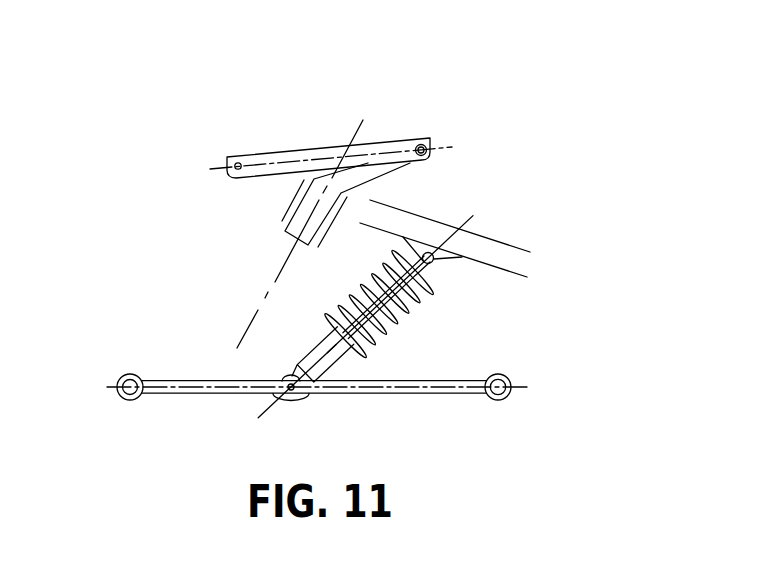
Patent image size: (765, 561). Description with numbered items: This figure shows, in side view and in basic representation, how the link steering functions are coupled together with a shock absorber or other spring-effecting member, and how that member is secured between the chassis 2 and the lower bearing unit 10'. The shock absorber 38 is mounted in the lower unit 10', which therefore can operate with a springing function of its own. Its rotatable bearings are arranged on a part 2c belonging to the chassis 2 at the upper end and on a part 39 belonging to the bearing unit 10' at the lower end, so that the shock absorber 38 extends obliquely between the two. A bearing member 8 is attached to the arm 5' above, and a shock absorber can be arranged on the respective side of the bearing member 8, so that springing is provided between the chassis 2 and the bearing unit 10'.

The lever arm 5' is at (331, 210).
The bearing member 8 is at (288, 212).
The chassis 2 is at (508, 245).
The part belonging to the chassis 2c is at (437, 265).
The spring damper unit 38 is at (387, 335).
The part belonging to the bearing unit 39 is at (292, 396).
The lower bearing unit 10' is at (318, 402).